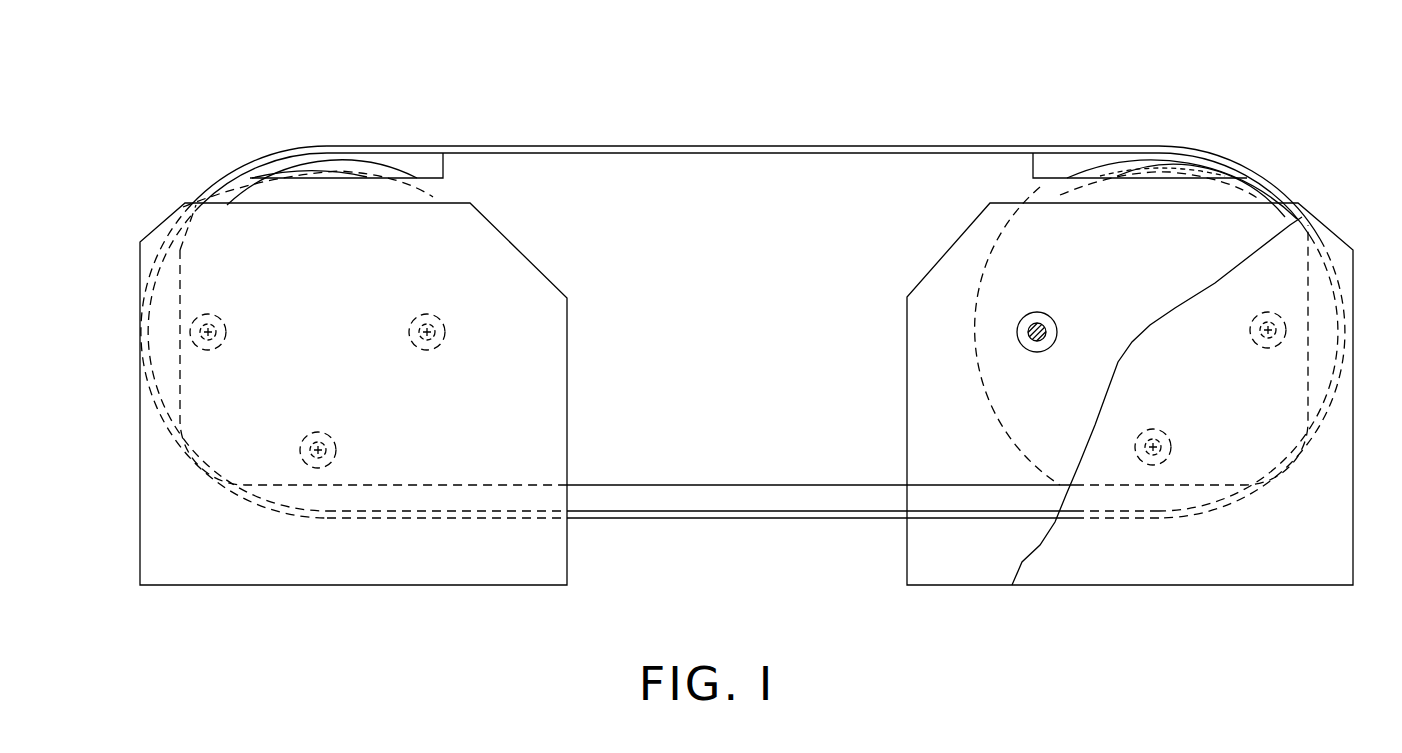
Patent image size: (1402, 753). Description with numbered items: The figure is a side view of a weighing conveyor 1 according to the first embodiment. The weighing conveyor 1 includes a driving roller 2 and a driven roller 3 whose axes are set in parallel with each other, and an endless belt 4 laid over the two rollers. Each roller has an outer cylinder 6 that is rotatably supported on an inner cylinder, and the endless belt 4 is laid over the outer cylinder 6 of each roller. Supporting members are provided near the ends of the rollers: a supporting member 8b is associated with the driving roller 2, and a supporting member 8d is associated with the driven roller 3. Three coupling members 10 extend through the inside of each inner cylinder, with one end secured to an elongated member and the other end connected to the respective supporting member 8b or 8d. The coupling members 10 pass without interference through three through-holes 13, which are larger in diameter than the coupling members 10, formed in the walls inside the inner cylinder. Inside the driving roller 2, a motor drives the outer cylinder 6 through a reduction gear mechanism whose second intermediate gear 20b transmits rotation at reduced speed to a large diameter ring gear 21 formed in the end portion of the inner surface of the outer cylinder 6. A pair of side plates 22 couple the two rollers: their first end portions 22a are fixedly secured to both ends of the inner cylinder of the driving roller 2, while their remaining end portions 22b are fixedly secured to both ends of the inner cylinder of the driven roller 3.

The weighing conveyor 1 is at (712, 104).
The driving roller 2 is at (1214, 128).
The driven roller 3 is at (283, 136).
The endless belt 4 is at (395, 146).
The outer cylinder 6 is at (245, 168).
The supporting member 8b is at (1320, 563).
The supporting member 8d is at (300, 570).
The coupling members 10 is at (210, 352).
The through-holes 13 is at (216, 320).
The second intermediate gear 20b is at (1157, 165).
The ring gear 21 is at (1120, 170).
The side plates 22 is at (902, 192).
The first end portions 22a is at (1230, 187).
The remaining end portions 22b is at (303, 185).